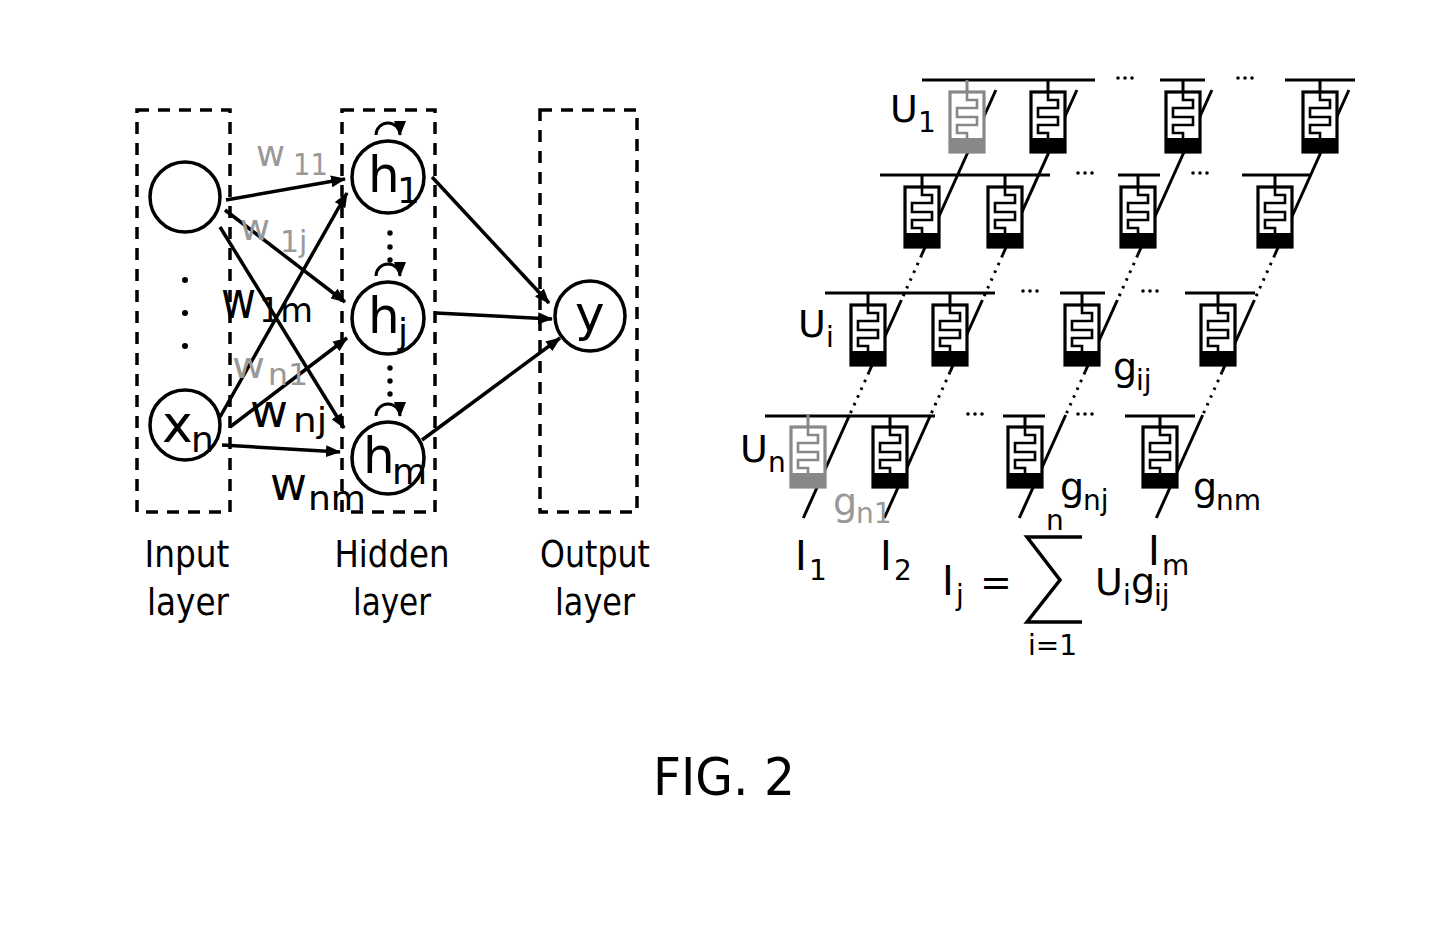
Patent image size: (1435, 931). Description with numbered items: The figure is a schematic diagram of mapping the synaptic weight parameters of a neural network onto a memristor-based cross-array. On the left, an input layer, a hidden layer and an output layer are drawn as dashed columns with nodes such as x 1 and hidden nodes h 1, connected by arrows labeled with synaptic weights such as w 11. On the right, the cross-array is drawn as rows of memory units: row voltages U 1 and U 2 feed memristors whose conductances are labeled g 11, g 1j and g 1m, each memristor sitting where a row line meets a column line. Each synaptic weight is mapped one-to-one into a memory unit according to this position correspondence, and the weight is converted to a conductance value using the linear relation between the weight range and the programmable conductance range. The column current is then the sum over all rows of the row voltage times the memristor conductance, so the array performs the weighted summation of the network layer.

The input node x1 1 is at (185, 197).
The second row U2 of memristor crossbar 2 is at (1079, 211).
The memristor conductance g11 11 is at (1024, 130).
The memristor conductance g1j 1j is at (1211, 126).
The memristor conductance g1m 1m is at (1359, 128).